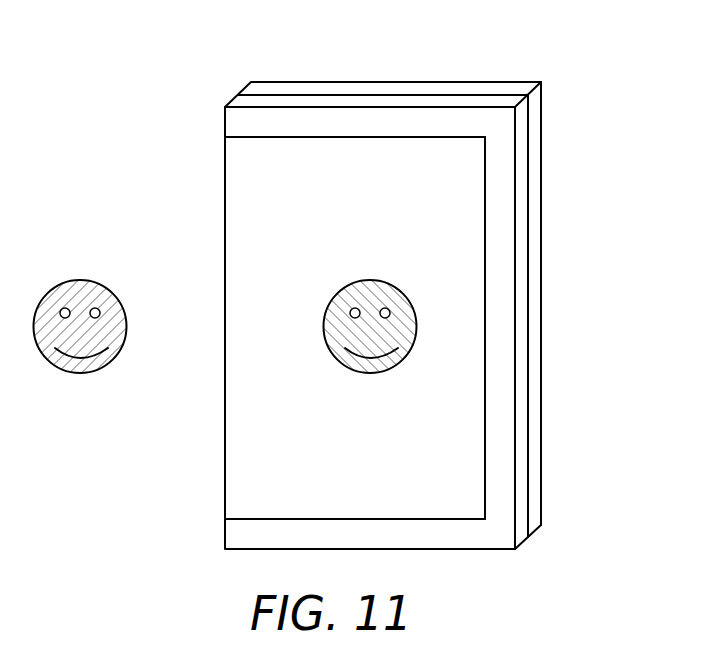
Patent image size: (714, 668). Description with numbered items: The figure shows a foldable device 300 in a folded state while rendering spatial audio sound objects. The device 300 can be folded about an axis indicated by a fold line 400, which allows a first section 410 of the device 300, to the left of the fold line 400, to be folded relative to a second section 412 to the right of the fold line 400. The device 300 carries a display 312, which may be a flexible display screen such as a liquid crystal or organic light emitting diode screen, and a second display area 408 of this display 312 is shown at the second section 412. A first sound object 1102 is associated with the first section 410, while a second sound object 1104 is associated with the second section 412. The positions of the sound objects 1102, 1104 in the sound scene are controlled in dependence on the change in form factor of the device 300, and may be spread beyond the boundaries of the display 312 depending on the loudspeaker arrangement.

The foldable device 300 is at (281, 82).
The fold line 400 is at (225, 172).
The second display area 408 is at (249, 474).
The first section 410 is at (542, 176).
The second section 412 is at (523, 293).
The display 312 is at (486, 460).
The first sound object 1102 is at (80, 373).
The second sound object 1104 is at (370, 373).